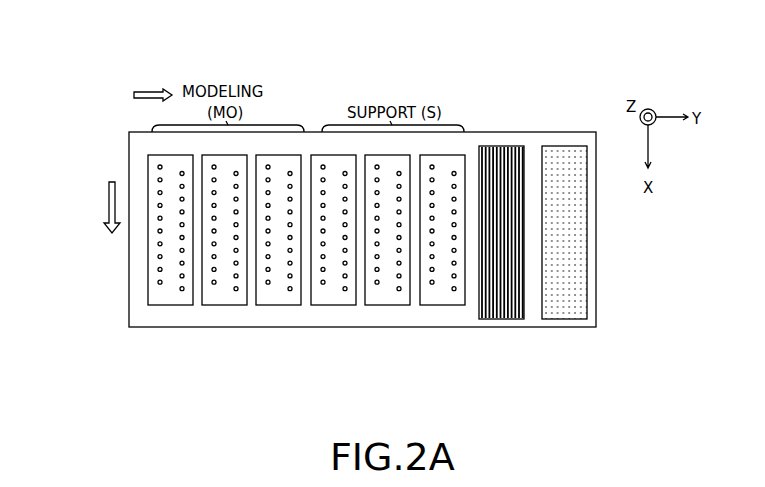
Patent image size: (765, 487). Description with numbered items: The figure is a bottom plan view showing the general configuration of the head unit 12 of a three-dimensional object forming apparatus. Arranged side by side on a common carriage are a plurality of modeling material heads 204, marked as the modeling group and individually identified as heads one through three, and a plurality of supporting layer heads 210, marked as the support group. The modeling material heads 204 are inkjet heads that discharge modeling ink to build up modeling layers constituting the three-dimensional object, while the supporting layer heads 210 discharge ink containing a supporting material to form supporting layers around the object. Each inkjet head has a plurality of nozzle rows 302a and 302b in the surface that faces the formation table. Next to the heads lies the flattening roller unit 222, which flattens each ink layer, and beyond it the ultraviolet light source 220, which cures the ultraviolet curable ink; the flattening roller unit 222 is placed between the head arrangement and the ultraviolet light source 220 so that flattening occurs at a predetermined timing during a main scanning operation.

The head unit 12 is at (582, 62).
The modeling material head 204 is at (170, 306).
The supporting layer head 210 is at (332, 306).
The ultraviolet light source 220 is at (580, 278).
The flattening roller unit 222 is at (503, 319).
The nozzle row 302a is at (157, 168).
The nozzle row 302b is at (180, 168).